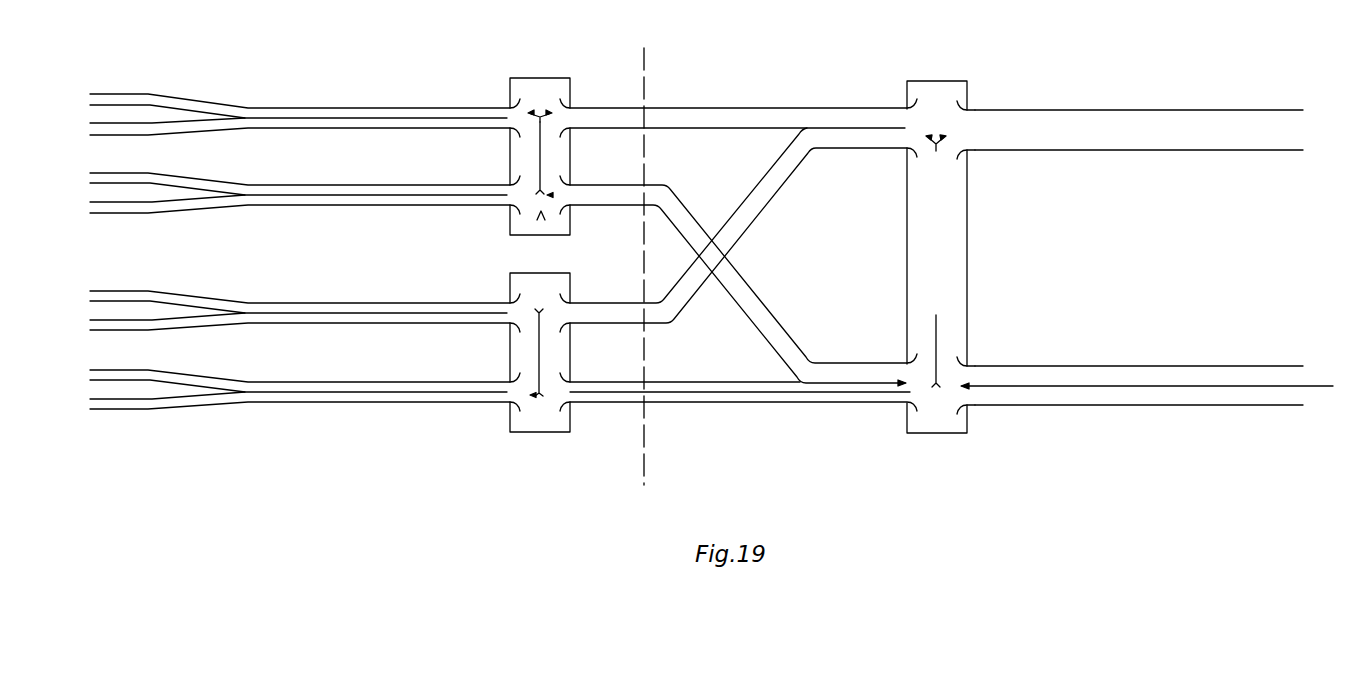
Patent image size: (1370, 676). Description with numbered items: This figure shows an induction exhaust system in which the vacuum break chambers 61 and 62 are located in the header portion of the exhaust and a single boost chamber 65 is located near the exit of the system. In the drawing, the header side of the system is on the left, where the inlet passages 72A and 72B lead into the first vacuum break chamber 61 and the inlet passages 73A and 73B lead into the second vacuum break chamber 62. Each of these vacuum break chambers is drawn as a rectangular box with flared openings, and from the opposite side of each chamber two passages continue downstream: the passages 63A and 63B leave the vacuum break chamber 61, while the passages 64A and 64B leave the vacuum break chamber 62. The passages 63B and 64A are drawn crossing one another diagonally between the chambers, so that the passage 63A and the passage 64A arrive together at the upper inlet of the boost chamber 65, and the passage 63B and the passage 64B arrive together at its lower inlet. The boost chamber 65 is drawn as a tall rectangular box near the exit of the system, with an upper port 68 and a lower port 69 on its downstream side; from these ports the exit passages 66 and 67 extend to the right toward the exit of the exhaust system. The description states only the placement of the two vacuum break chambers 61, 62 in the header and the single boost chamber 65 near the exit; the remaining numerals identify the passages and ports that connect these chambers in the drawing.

The vacuum break chamber 61 is at (575, 65).
The vacuum break chamber 62 is at (575, 273).
The first outlet channel of chamber 61 63A is at (698, 107).
The second outlet channel of chamber 61 63B is at (675, 192).
The first outlet channel of chamber 62 64A is at (578, 302).
The second outlet channel of chamber 62 64B is at (580, 377).
The boost chamber 65 is at (975, 257).
The upper output channel 66 is at (1158, 110).
The lower output channel 67 is at (1130, 358).
The upper outlet port of chamber 65 68 is at (973, 107).
The lower outlet port of chamber 65 69 is at (968, 363).
The first inlet channel group 72A is at (383, 102).
The second inlet channel group 72B is at (357, 185).
The third inlet channel group 73A is at (348, 302).
The fourth inlet channel group 73B is at (332, 378).